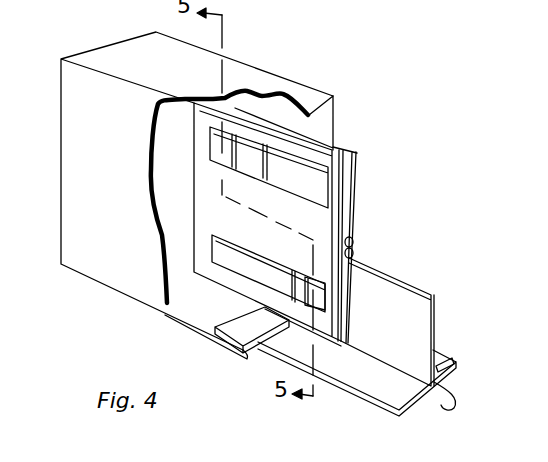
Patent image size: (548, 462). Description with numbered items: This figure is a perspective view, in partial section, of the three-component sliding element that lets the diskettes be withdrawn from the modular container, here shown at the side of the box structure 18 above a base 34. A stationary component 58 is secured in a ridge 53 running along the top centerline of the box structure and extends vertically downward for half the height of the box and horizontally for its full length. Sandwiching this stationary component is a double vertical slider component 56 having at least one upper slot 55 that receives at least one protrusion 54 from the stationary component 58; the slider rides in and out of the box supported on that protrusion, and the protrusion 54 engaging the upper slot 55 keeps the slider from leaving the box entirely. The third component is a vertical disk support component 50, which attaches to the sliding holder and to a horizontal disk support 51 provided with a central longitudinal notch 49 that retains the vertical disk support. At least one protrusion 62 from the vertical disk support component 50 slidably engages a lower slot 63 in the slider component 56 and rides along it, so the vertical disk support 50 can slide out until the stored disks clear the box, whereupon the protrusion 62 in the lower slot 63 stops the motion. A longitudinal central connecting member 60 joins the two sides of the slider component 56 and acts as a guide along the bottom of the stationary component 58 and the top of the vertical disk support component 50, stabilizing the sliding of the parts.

The housing box 18 is at (148, 43).
The base plate 34 is at (372, 411).
The central longitudinal notch 49 is at (455, 404).
The vertical disk support component 50 is at (402, 298).
The horizontal disk support 51 is at (445, 364).
The ridge 53 is at (232, 98).
The protrusion 54 is at (220, 148).
The upper slot 55 is at (316, 188).
The double vertical slider component 56 is at (336, 152).
The stationary component 58 is at (256, 108).
The longitudinal central connecting member 60 is at (353, 246).
The protrusion 62 is at (315, 296).
The lower slot 63 is at (238, 260).